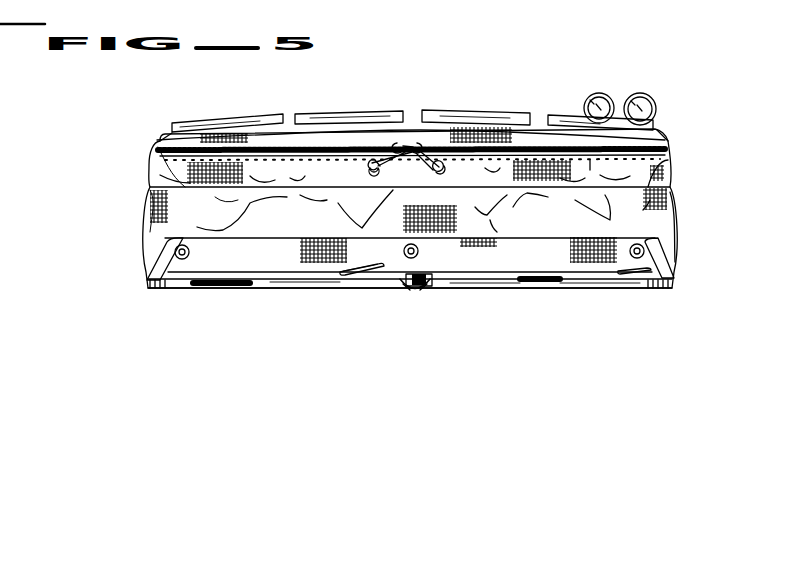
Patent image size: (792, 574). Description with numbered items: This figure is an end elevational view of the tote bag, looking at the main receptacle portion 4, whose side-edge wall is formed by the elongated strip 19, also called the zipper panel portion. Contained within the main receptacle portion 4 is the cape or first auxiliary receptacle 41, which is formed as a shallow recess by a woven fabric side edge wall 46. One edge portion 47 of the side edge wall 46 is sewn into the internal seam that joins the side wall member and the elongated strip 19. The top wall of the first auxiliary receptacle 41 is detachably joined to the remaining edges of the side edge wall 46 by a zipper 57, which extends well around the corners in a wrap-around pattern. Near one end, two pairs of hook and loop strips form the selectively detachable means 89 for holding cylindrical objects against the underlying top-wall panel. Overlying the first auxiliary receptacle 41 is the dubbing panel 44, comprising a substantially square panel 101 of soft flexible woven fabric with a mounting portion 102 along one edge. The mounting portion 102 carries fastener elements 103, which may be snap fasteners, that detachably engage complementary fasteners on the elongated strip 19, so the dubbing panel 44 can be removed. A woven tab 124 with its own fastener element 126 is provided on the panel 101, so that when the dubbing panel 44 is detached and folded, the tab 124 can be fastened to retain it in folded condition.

The main receptacle portion 4 is at (681, 197).
The elongated strip 19 is at (650, 223).
The first auxiliary receptacle 41 is at (474, 111).
The dubbing panel 44 is at (358, 289).
The side edge wall 46 is at (165, 170).
The edge portion 47 is at (653, 164).
The zipper 57 is at (345, 142).
The selectively detachable means 89 is at (638, 93).
The panel 101 is at (192, 288).
The mounting portion 102 is at (259, 262).
The fastener elements 103 is at (172, 258).
The woven tab 124 is at (423, 287).
The fastener element 126 is at (413, 292).